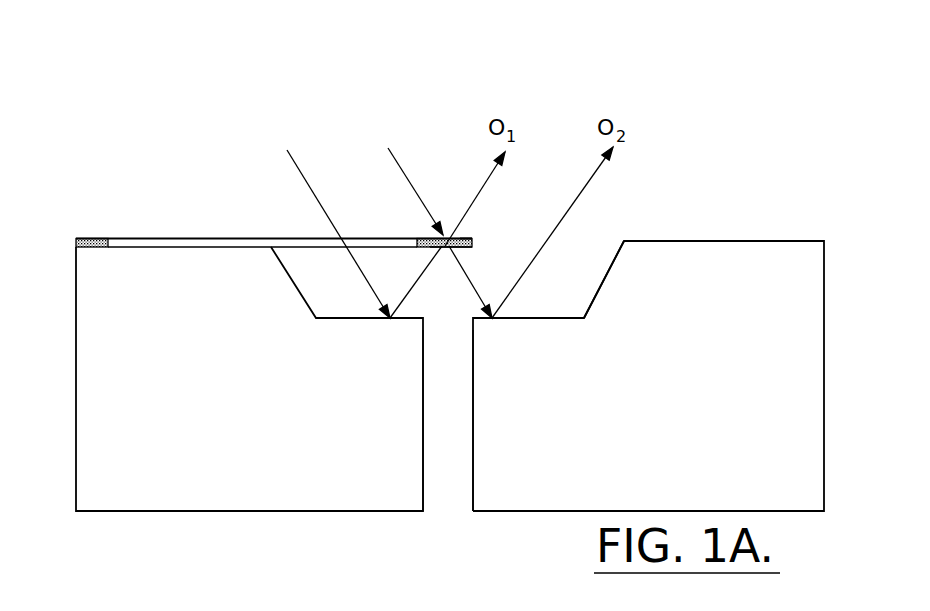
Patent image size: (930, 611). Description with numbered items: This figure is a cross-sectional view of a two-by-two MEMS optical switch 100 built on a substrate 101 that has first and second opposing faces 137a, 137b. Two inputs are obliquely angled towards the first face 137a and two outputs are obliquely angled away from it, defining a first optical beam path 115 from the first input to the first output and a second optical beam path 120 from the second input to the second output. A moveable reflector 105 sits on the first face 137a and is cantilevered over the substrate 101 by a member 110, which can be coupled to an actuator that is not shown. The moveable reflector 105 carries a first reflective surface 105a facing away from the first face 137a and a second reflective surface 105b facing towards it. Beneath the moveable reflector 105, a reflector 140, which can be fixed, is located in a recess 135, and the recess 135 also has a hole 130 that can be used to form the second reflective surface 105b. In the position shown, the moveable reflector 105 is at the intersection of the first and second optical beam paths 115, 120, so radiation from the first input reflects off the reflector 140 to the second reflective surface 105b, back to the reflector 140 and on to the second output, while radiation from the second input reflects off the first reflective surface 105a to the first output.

The 2×2 MEMS optical switch 100 is at (508, 66).
The substrate 101 is at (170, 492).
The moveable reflector 105 is at (305, 221).
The first reflective surface 105a is at (551, 150).
The second reflective surface 105b is at (408, 303).
The member 110 is at (274, 220).
The first optical beam path 115 is at (334, 215).
The second optical beam path 120 is at (426, 173).
The hole 130 is at (472, 441).
The recess 135 is at (623, 256).
The first face 137a is at (724, 216).
The second face 137b is at (249, 529).
The reflector 140 is at (539, 343).